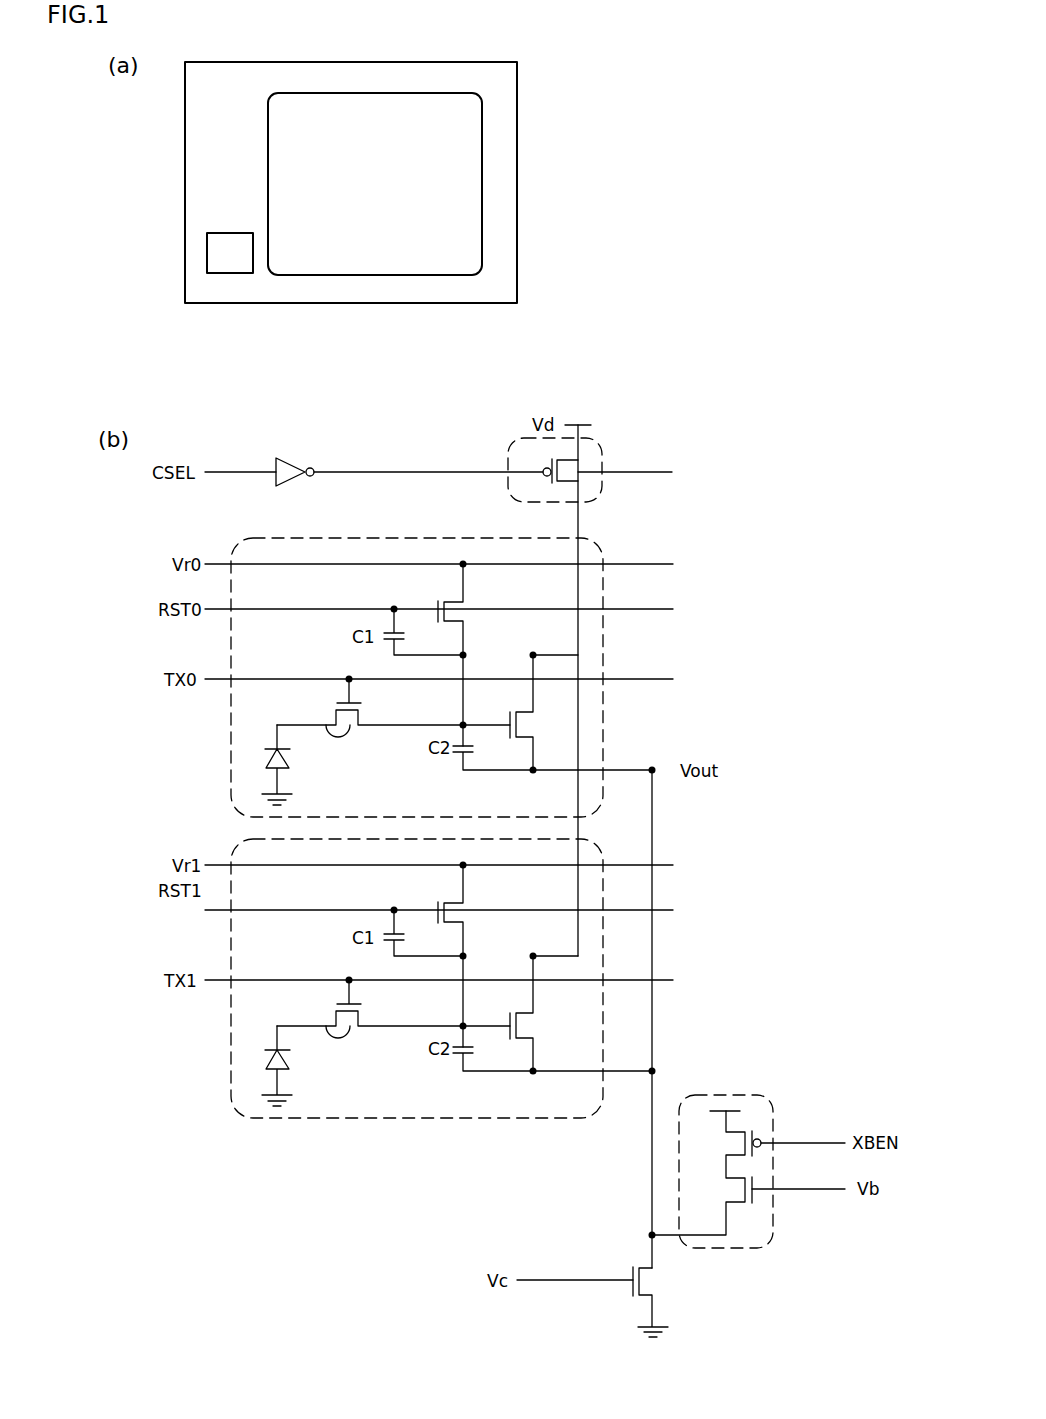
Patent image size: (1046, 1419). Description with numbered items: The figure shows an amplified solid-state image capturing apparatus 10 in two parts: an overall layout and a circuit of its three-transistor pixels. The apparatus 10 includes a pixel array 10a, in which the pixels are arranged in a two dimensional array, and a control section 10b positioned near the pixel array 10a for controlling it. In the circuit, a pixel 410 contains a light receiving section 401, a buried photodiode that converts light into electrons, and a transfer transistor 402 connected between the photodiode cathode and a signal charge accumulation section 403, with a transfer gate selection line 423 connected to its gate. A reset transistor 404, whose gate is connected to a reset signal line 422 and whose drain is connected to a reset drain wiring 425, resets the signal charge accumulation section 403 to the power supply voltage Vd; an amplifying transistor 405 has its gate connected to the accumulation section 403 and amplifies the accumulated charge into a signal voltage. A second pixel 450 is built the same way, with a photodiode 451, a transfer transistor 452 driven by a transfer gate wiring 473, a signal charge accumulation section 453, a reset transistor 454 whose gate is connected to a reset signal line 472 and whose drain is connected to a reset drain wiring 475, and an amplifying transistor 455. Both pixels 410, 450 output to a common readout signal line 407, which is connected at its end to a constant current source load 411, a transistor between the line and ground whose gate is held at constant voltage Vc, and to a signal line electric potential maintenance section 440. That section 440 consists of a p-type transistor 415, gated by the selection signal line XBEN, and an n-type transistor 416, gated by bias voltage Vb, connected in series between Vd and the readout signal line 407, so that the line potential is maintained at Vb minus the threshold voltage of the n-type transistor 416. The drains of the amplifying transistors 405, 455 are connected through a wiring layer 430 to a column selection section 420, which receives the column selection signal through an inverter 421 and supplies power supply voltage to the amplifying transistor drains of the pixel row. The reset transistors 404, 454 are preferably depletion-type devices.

The amplified solid-state image capturing apparatus 10 is at (395, 303).
The pixel array 10a is at (463, 174).
The control section 10b is at (229, 260).
The inverter 421 is at (300, 461).
The column selection section 420 is at (598, 463).
The wiring layer 430 is at (583, 505).
The reset drain wiring 425 is at (641, 564).
The reset signal line 422 is at (641, 609).
The transfer gate selection line 423 is at (641, 679).
The reset transistor 404 is at (449, 607).
The transfer transistor 402 is at (370, 708).
The signal charge accumulation section 403 is at (460, 724).
The amplifying transistor 405 is at (522, 728).
The light receiving section 401 is at (287, 762).
The pixel 410 is at (393, 538).
The reset drain wiring 475 is at (463, 864).
The reset signal line 472 is at (463, 909).
The transfer gate wiring 473 is at (463, 979).
The reset transistor 454 is at (471, 910).
The transfer transistor 452 is at (370, 1009).
The signal charge accumulation section 453 is at (447, 1001).
The amplifying transistor 455 is at (522, 1013).
The photodiode 451 is at (299, 1066).
The pixel 450 is at (415, 819).
The signal line electric potential maintenance section 440 is at (748, 1158).
The p-type transistor 415 is at (737, 1138).
The n-type transistor 416 is at (737, 1185).
The readout signal line 407 is at (632, 1019).
The constant current source load 411 is at (646, 1283).